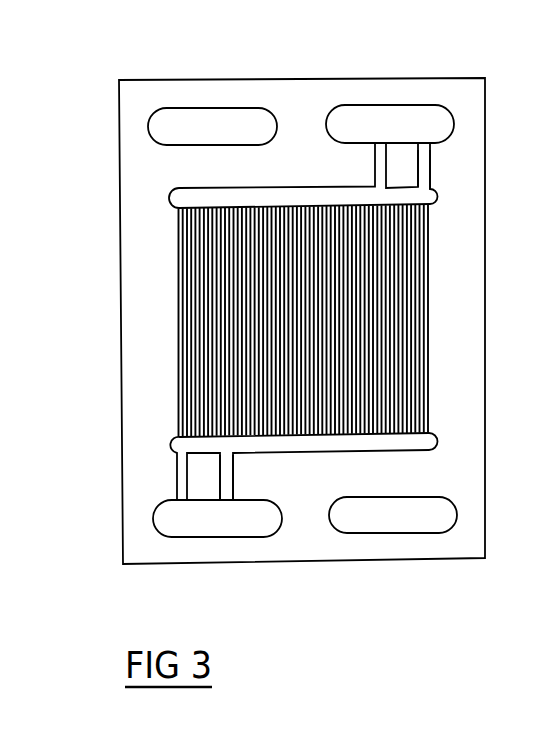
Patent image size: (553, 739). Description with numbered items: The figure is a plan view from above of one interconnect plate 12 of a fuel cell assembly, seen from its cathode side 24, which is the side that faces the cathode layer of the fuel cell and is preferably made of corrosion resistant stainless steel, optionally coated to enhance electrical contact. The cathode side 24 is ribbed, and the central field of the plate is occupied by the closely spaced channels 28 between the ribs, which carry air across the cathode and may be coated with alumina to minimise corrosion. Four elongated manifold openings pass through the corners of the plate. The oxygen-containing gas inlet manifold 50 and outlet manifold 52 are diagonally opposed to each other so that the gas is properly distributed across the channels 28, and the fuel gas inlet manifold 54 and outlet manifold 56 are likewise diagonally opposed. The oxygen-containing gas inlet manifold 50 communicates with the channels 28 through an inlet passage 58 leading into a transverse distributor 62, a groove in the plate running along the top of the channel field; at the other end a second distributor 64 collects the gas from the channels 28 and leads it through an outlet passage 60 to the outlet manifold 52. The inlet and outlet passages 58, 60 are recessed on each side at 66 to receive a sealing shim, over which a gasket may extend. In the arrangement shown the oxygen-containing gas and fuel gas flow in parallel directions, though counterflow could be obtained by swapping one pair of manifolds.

The interconnect plate 12 is at (261, 321).
The cathode side 24 is at (145, 275).
The channels 28 is at (187, 339).
The oxygen-containing gas inlet manifold 50 is at (388, 120).
The oxygen-containing gas outlet manifold 52 is at (183, 518).
The fuel gas inlet manifold 54 is at (209, 121).
The fuel gas outlet manifold 56 is at (433, 515).
The inlet passage 58 is at (404, 154).
The outlet passage 60 is at (200, 488).
The distributor 62 is at (288, 317).
The distributor 64 is at (291, 470).
The recess 66 is at (423, 173).